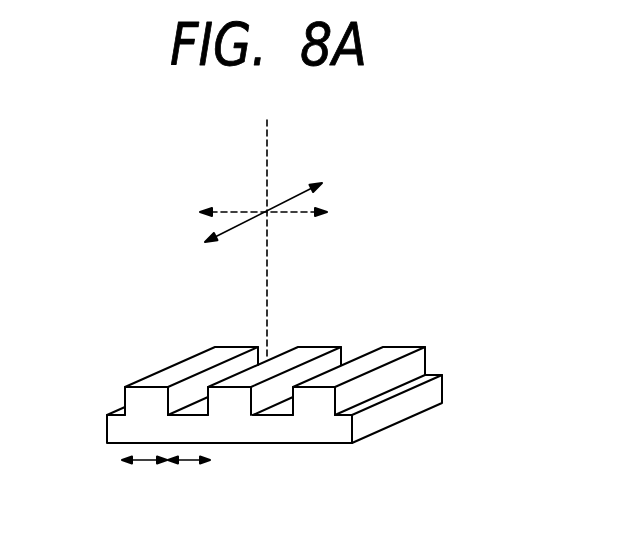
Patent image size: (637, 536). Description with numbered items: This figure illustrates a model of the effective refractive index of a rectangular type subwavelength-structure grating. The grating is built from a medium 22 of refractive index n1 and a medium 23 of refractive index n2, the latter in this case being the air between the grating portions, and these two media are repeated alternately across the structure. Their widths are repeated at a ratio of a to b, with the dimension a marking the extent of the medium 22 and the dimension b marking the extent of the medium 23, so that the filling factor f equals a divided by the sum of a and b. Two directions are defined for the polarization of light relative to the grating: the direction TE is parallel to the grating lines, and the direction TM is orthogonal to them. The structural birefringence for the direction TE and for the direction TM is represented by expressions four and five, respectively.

The medium 22 is at (125, 386).
The medium 23 is at (190, 386).
The width of first medium a is at (144, 477).
The width of second medium b is at (189, 477).
The TE direction TE is at (244, 223).
The TM direction TM is at (285, 212).